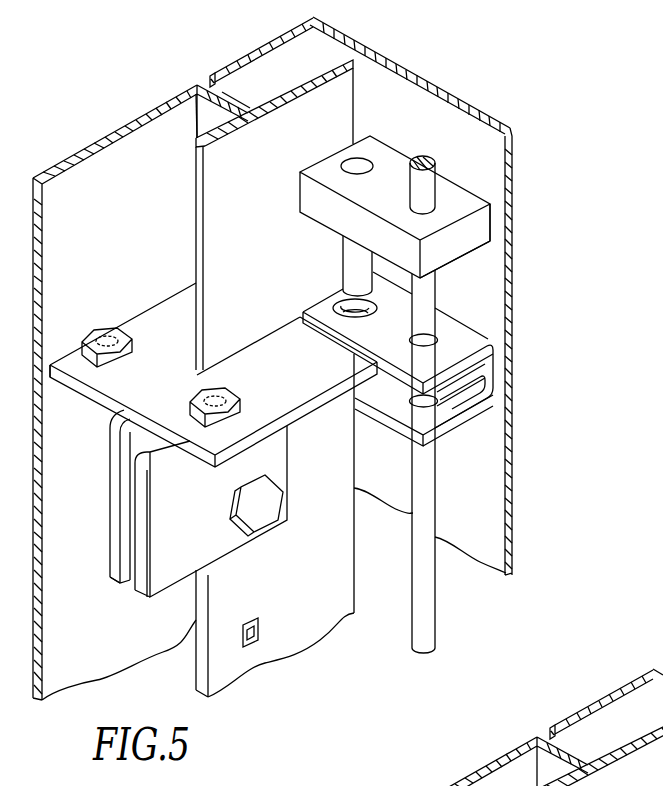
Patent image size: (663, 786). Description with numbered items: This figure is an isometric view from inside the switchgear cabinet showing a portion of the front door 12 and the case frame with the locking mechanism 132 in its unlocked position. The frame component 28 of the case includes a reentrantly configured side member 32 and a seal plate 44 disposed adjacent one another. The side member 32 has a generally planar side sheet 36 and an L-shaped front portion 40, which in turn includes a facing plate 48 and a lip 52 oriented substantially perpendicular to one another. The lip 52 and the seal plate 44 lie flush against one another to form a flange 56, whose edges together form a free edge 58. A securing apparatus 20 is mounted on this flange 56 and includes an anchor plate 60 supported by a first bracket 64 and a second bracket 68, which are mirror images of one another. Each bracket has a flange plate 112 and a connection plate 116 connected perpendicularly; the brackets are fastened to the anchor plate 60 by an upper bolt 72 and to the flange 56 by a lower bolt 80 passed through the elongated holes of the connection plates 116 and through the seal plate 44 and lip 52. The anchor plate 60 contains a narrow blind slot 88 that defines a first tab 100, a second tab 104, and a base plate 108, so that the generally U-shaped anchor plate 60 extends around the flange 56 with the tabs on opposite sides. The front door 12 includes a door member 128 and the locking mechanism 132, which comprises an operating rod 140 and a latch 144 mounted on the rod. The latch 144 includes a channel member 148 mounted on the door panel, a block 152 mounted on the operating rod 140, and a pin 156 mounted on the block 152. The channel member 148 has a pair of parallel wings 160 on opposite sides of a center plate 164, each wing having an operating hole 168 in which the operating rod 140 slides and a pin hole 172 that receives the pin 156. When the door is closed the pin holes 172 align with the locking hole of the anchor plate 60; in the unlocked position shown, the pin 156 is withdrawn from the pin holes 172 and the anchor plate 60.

The front door 12 is at (473, 94).
The door member 128 is at (336, 24).
The securing apparatus 20 is at (97, 448).
The frame component 28 is at (176, 92).
The side member 32 is at (58, 158).
The side sheet 36 is at (92, 143).
The front portion 40 is at (216, 78).
The seal plate 44 is at (268, 98).
The facing plate 48 is at (222, 100).
The lip 52 is at (217, 121).
The flange 56 is at (322, 120).
The free edge 58 is at (196, 195).
The anchor plate 60 is at (318, 436).
The first bracket 64 is at (164, 606).
The second bracket 68 is at (107, 590).
The upper bolt 72 is at (127, 343).
The lower bolt 80 is at (265, 515).
The slot 88 is at (248, 345).
The first tab 100 is at (375, 380).
The second tab 104 is at (178, 297).
The base plate 108 is at (65, 362).
The flange plate 112 is at (110, 497).
The connection plate 116 is at (92, 435).
The locking mechanism 132 is at (499, 197).
The operating rod 140 is at (437, 175).
The latch 144 is at (480, 254).
The channel member 148 is at (507, 403).
The block 152 is at (483, 229).
The pin 156 is at (345, 262).
The wing 160 is at (462, 372).
The center plate 164 is at (500, 348).
The operating hole 168 is at (420, 342).
The pin hole 172 is at (352, 320).